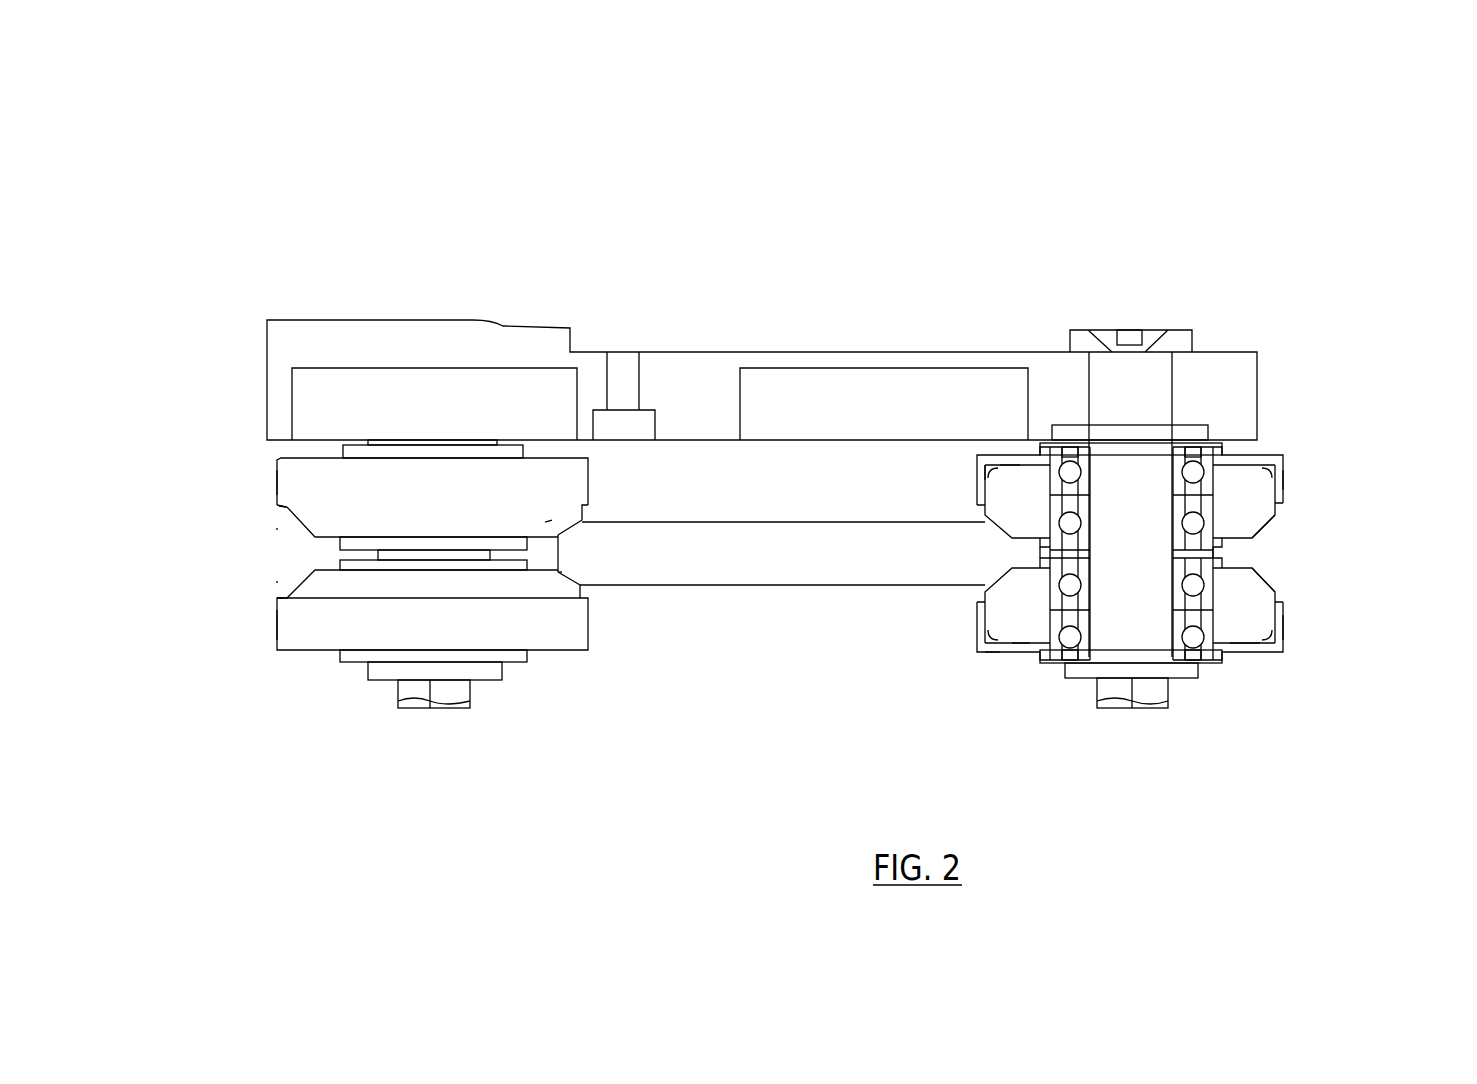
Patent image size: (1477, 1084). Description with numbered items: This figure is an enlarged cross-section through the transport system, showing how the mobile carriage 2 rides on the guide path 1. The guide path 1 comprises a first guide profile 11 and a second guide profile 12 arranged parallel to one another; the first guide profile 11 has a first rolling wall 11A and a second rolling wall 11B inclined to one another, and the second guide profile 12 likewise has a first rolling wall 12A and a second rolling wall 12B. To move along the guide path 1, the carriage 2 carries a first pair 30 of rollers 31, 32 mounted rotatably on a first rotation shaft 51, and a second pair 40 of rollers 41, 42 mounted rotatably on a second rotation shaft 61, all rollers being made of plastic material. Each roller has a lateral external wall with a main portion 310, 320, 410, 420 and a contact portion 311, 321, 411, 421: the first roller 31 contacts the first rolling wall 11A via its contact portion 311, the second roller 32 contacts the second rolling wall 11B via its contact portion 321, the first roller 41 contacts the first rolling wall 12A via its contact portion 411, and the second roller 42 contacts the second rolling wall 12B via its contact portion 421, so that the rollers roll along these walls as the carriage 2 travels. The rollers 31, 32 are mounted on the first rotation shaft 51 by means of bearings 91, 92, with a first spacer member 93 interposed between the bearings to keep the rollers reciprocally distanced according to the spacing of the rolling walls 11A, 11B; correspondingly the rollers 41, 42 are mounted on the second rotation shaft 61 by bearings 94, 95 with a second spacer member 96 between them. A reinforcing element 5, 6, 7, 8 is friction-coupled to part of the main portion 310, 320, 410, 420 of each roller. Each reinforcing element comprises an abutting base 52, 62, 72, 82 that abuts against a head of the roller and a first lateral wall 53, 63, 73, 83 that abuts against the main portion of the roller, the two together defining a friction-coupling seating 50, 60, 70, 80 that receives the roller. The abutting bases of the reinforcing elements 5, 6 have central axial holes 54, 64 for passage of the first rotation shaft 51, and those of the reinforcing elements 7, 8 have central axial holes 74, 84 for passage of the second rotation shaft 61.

The guide path 1 is at (733, 570).
The mobile carriage 2 is at (684, 363).
The reinforcing element 5 is at (1292, 475).
The reinforcing element 6 is at (1290, 625).
The reinforcing element 7 is at (277, 475).
The reinforcing element 8 is at (315, 637).
The first guide profile 11 is at (1013, 550).
The first rolling wall 11A is at (997, 527).
The second rolling wall 11B is at (995, 577).
The second guide profile 12 is at (550, 553).
The first rolling wall 12A is at (566, 533).
The second rolling wall 12B is at (572, 588).
The first pair of rollers 30 is at (1283, 535).
The first roller 31 is at (1268, 462).
The second roller 32 is at (1287, 640).
The second pair of rollers 40 is at (275, 582).
The first roller 41 is at (273, 507).
The second roller 42 is at (282, 602).
The friction-coupling seating 50 is at (1272, 492).
The first rotation shaft 51 is at (1148, 618).
The abutting base 52 is at (1242, 483).
The first lateral wall 53 is at (1293, 467).
The central axial hole 54 is at (1222, 458).
The friction-coupling seating 60 is at (1272, 610).
The second rotation shaft 61 is at (453, 696).
The abutting base 62 is at (1247, 647).
The first lateral wall 63 is at (1288, 627).
The central axial hole 64 is at (1030, 635).
The friction-coupling seating 70 is at (282, 510).
The abutting base 72 is at (342, 452).
The first lateral wall 73 is at (310, 473).
The central axial hole 74 is at (345, 448).
The friction-coupling seating 80 is at (278, 630).
The abutting base 82 is at (332, 657).
The first lateral wall 83 is at (273, 603).
The central axial hole 84 is at (347, 657).
The bearing 91 is at (1205, 470).
The bearing 92 is at (1205, 647).
The first spacer member 93 is at (1180, 485).
The bearing 94 is at (413, 540).
The bearing 95 is at (507, 567).
The second spacer member 96 is at (453, 550).
The main portion 310 is at (1025, 462).
The contact portion 311 is at (1014, 460).
The main portion 320 is at (1007, 645).
The contact portion 321 is at (1017, 625).
The main portion 410 is at (578, 512).
The contact portion 411 is at (560, 530).
The main portion 420 is at (583, 594).
The contact portion 421 is at (570, 592).